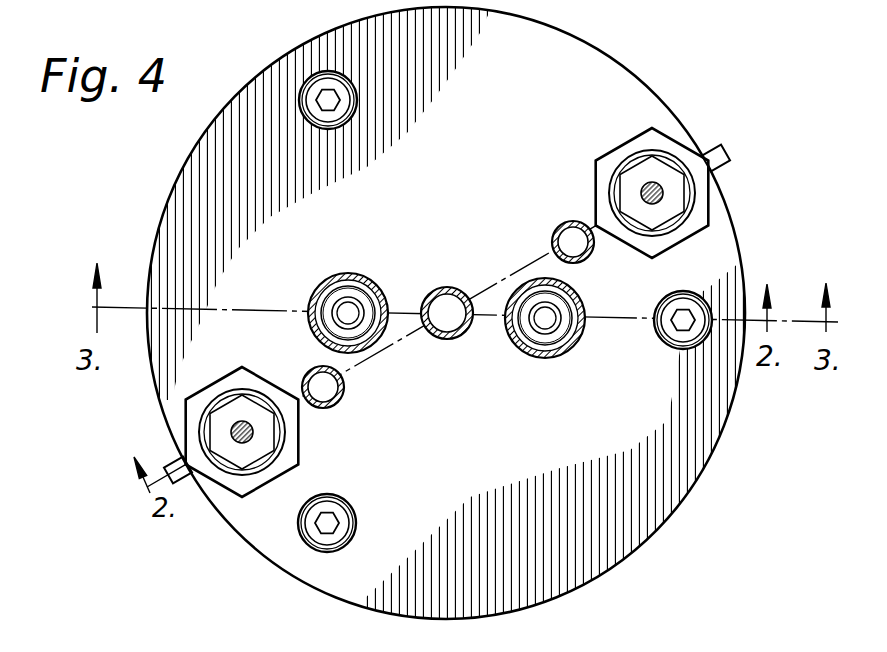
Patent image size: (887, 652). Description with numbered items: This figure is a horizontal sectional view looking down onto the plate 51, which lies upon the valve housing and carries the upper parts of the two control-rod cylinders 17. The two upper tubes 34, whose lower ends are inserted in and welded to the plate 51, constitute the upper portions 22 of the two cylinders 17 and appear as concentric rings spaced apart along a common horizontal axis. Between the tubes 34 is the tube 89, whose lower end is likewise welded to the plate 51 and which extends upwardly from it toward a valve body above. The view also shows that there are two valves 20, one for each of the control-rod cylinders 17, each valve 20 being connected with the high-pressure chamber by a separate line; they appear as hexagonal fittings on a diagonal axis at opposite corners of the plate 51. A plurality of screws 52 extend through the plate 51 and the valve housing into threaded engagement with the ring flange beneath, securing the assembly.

The cylinder 17 is at (305, 292).
The valve 20 is at (720, 216).
The upper portion of the cylinder 22 is at (335, 272).
The upper tube 34 is at (368, 286).
The plate 51 is at (463, 494).
The screw 52 is at (302, 87).
The tube 89 is at (447, 340).